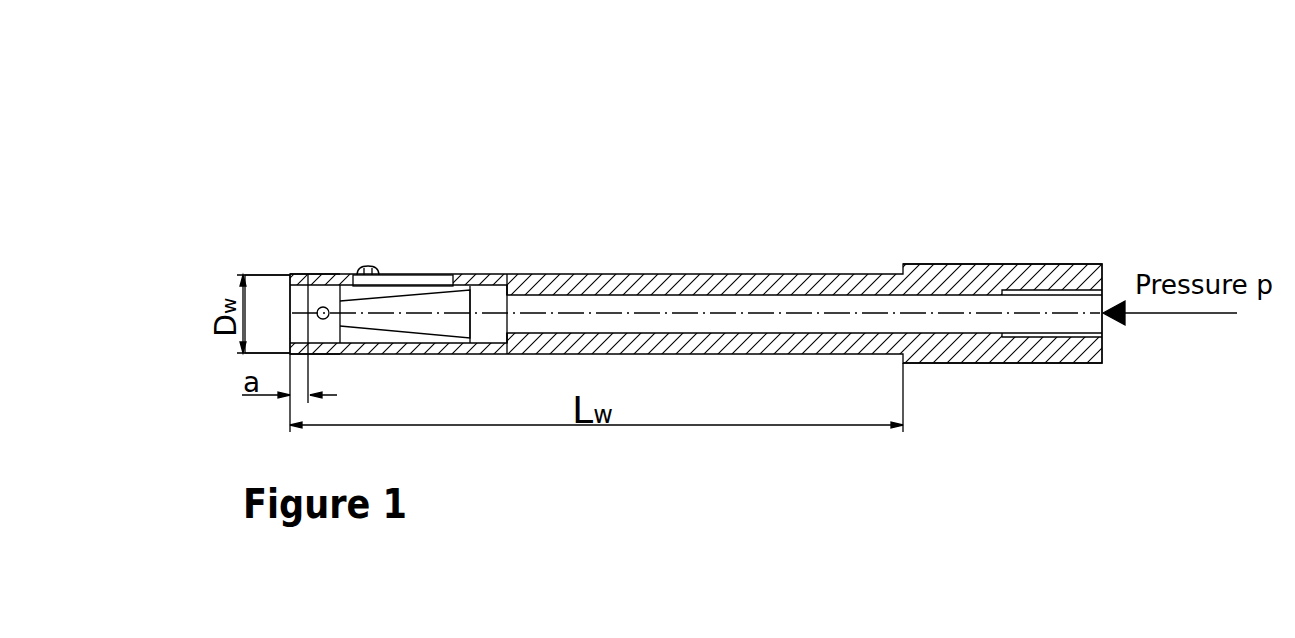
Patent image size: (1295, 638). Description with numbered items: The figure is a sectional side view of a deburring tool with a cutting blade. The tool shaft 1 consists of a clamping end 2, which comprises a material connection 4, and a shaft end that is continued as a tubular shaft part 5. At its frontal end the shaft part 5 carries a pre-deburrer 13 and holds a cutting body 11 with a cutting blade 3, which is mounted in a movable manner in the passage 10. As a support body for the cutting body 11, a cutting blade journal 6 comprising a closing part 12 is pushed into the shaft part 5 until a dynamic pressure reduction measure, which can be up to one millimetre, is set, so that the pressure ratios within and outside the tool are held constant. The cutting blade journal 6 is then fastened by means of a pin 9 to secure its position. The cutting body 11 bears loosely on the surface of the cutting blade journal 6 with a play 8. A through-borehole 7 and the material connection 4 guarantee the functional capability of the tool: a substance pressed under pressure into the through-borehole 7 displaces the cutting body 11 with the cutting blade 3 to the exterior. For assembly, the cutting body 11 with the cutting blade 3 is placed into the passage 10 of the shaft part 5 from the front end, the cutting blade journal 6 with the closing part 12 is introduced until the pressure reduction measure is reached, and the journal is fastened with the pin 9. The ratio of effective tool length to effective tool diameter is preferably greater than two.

The tool shaft 1 is at (796, 279).
The clamping end 2 is at (977, 277).
The cutting blade 3 is at (368, 267).
The material connection 4 is at (1060, 299).
The tubular shaft part 5 is at (505, 274).
The cutting blade journal 6 is at (474, 290).
The through-borehole 7 is at (886, 311).
The play 8 is at (391, 292).
The pin 9 is at (325, 307).
The passage 10 is at (455, 291).
The cutting body 11 is at (418, 275).
The closing part 12 is at (305, 278).
The pre-deburrer 13 is at (290, 273).